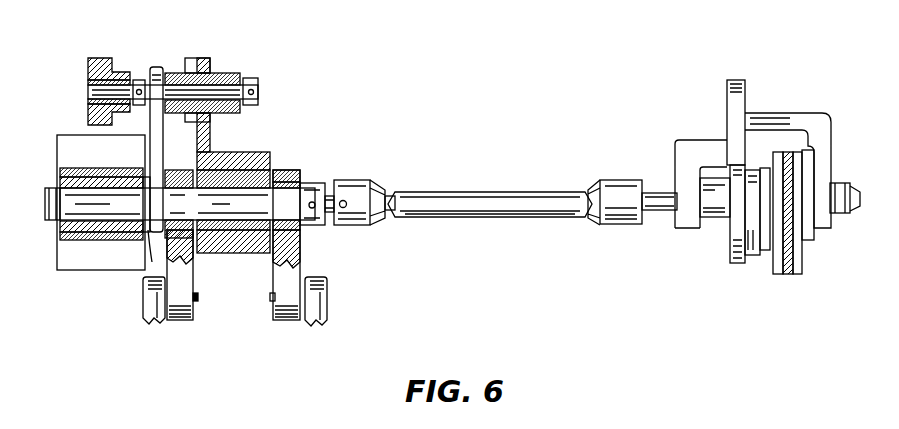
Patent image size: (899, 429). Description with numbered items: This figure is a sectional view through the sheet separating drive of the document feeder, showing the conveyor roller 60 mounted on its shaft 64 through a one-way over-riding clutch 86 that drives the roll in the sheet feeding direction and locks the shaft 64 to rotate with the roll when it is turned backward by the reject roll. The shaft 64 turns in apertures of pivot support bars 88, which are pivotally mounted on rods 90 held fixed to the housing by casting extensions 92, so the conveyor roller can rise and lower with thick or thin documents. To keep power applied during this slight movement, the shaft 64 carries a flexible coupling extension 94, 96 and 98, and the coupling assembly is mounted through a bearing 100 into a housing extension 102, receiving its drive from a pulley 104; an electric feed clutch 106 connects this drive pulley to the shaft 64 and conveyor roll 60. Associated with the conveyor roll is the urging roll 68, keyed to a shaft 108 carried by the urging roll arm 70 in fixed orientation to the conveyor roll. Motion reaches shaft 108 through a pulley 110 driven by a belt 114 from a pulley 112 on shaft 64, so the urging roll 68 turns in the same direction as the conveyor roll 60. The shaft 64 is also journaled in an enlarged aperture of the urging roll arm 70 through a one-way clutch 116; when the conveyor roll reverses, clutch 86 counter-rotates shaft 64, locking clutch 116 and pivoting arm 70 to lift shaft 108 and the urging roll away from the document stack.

The conveyor roller 60 is at (96, 272).
The shaft 64 is at (62, 170).
The urging roll 68 is at (93, 58).
The urging roll arm 70 is at (210, 135).
The one-way over-riding clutch 86 is at (62, 236).
The pivot support bars 88 is at (274, 262).
The rods 90 is at (272, 297).
The casting extensions 92 is at (143, 318).
The flexible coupling extension 94 is at (360, 225).
The flexible coupling extension 96 is at (522, 190).
The flexible coupling extension 98 is at (606, 224).
The bearing 100 is at (676, 212).
The housing extension 102 is at (727, 118).
The pulley 104 is at (814, 152).
The electric feed clutch 106 is at (712, 220).
The shaft 108 is at (88, 94).
The pulley 110 is at (145, 105).
The pulley 112 is at (150, 262).
The belt 114 is at (163, 133).
The one-way clutch 116 is at (266, 164).